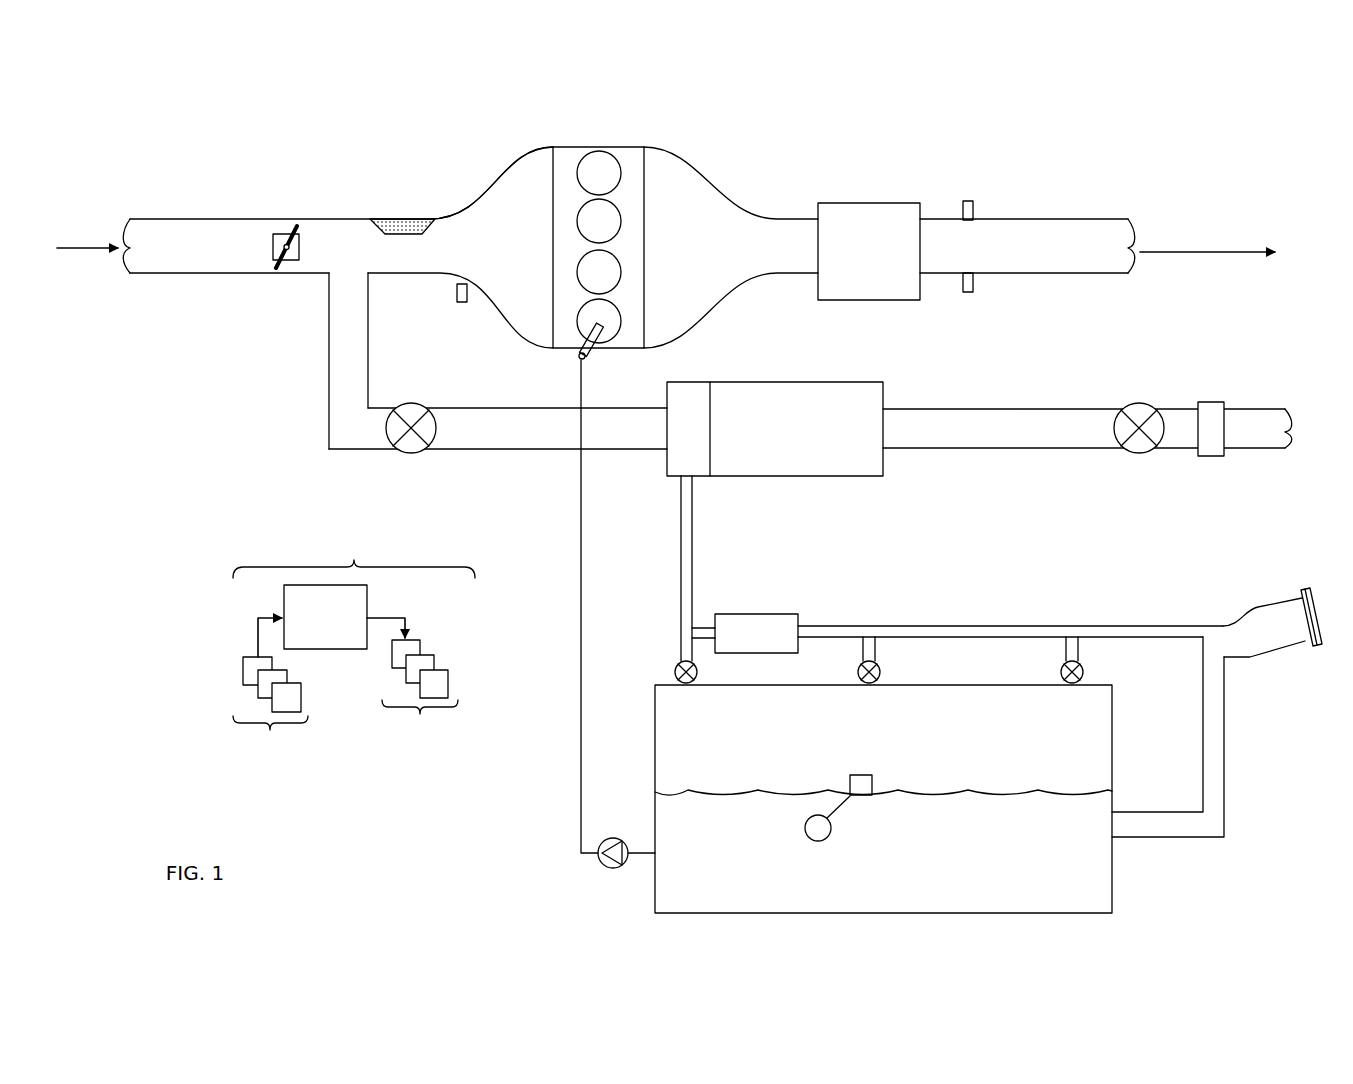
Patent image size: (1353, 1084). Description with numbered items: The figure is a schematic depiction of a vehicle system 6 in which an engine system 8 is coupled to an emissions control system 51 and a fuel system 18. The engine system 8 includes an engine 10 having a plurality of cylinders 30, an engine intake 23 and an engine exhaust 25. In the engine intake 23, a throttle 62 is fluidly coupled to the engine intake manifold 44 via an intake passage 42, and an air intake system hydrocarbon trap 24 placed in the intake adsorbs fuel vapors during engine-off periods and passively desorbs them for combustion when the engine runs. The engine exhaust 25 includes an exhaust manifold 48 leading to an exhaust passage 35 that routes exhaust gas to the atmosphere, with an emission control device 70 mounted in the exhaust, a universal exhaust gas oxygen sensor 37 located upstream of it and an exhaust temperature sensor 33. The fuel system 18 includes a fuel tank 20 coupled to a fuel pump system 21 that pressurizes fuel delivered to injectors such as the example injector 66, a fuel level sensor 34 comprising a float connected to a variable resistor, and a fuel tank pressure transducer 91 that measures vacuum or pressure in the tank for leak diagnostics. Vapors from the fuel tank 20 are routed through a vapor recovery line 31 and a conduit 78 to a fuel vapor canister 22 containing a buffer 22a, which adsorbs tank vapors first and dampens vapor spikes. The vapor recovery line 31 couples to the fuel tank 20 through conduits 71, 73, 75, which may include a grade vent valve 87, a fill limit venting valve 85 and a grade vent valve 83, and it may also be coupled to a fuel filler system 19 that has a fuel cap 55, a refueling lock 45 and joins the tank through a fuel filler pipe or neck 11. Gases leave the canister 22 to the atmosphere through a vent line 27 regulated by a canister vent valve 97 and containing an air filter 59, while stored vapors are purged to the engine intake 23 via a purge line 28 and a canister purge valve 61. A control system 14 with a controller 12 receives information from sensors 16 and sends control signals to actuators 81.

The vehicle system 6 is at (148, 155).
The engine system 8 is at (932, 148).
The engine 10 is at (644, 225).
The fuel filler pipe or neck 11 is at (1225, 730).
The controller 12 is at (325, 617).
The control system 14 is at (354, 546).
The sensors 16 is at (272, 697).
The fuel system 18 is at (1158, 872).
The fuel filler system 19 is at (1278, 586).
The fuel tank 20 is at (1113, 780).
The fuel pump system 21 is at (617, 838).
The fuel vapor canister 22 is at (883, 398).
The buffer 22a is at (690, 382).
The engine intake 23 is at (480, 175).
The air intake system hydrocarbon trap 24 is at (406, 218).
The engine exhaust 25 is at (812, 152).
The vent line 27 is at (1087, 428).
The purge line 28 is at (498, 428).
The cylinders 30 is at (616, 166).
The vapor recovery line 31 is at (1047, 626).
The exhaust temperature sensor 33 is at (962, 283).
The fuel level sensor 34 is at (457, 290).
The exhaust passage 35 is at (1080, 218).
The universal exhaust gas oxygen sensor 37 is at (963, 208).
The intake passage 42 is at (322, 276).
The engine intake manifold 44 is at (510, 250).
The refueling lock 45 is at (1305, 648).
The exhaust manifold 48 is at (720, 250).
The emissions control system 51 is at (1268, 362).
The fuel cap 55 is at (1306, 590).
The air filter 59 is at (1220, 402).
The canister purge valve 61 is at (413, 404).
The throttle 62 is at (300, 253).
The injector 66 is at (590, 352).
The emission control device 70 is at (858, 203).
The conduit 71 is at (690, 650).
The conduit 73 is at (860, 650).
The conduit 75 is at (1063, 650).
The conduit 78 is at (679, 512).
The actuators 81 is at (418, 689).
The grade vent valve 83 is at (1084, 672).
The fill limit venting valve 85 is at (881, 672).
The grade vent valve 87 is at (674, 672).
The fuel tank pressure transducer 91 is at (798, 623).
The canister vent valve 97 is at (1143, 404).